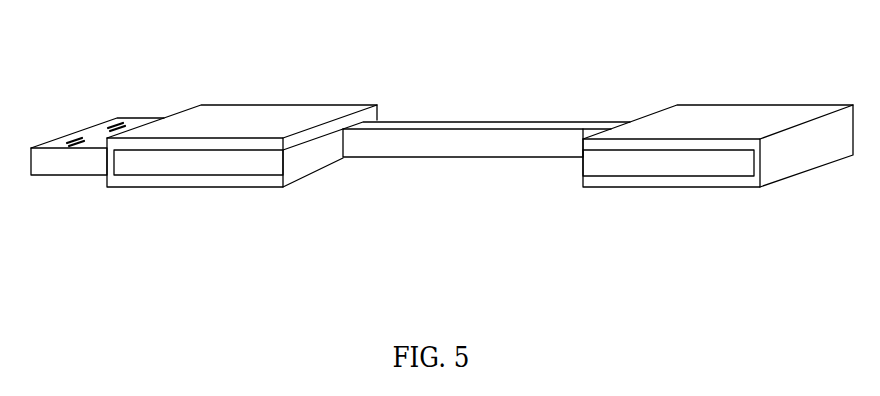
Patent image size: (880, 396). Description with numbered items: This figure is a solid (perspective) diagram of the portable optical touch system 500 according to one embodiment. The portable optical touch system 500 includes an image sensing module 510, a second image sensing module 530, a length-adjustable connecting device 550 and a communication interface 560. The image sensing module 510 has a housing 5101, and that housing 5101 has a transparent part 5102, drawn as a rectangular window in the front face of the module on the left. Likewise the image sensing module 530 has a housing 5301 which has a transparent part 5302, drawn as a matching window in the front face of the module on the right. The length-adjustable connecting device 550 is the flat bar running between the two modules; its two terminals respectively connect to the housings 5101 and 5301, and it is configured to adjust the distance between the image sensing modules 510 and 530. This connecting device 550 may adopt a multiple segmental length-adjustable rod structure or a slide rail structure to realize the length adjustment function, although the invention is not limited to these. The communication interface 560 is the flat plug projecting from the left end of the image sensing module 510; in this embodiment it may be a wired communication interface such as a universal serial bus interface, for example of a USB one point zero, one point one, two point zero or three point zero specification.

The portable optical touch system 500 is at (442, 142).
The image sensing module 510 is at (242, 126).
The housing 5101 is at (258, 113).
The transparent part 5102 is at (202, 167).
The image sensing module 530 is at (718, 127).
The housing 5301 is at (737, 113).
The transparent part 5302 is at (662, 168).
The length-adjustable connecting device 550 is at (500, 122).
The communication interface 560 is at (93, 128).